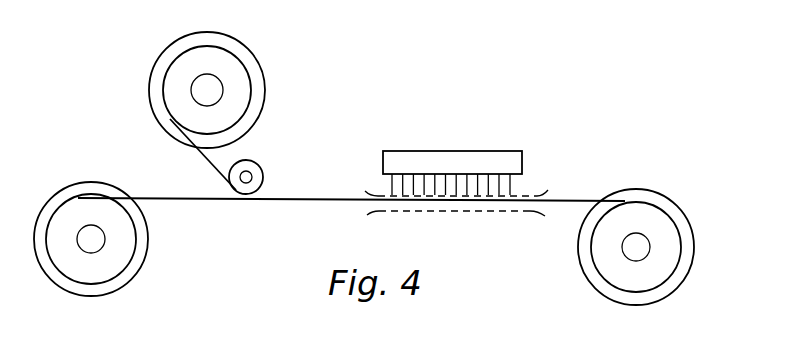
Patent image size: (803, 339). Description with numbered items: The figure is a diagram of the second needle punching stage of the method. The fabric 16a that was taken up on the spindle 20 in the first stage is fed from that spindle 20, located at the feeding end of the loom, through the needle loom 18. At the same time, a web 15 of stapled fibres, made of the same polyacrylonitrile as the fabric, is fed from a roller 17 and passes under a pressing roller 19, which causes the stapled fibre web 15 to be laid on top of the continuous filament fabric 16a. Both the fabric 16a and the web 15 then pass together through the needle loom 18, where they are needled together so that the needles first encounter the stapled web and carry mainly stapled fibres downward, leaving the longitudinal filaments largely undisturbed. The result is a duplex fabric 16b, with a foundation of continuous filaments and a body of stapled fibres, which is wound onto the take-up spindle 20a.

The web of stapled fibres 15 is at (200, 155).
The fabric 16a is at (200, 202).
The duplex fabric 16b is at (575, 203).
The roller 17 is at (255, 100).
The needle loom 18 is at (455, 146).
The pressing roller 19 is at (262, 178).
The spindle 20 is at (115, 258).
The take-up spindle 20a is at (658, 263).